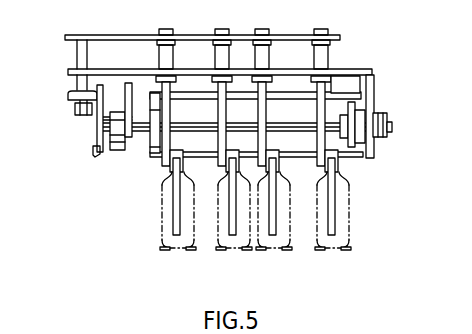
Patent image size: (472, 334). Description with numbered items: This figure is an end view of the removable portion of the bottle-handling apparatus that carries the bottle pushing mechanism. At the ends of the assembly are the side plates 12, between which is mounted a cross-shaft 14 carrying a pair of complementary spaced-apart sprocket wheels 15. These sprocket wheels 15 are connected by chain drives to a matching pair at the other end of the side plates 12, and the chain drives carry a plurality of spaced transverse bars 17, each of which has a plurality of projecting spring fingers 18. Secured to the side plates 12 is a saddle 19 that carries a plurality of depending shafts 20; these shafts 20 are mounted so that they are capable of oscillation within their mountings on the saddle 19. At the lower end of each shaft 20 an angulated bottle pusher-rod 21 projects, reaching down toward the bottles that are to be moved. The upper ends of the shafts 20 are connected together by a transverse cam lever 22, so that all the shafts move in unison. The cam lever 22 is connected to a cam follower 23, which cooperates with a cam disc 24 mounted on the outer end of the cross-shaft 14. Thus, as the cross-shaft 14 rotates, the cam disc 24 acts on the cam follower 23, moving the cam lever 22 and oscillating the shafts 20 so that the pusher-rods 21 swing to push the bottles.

The side plates 12 is at (375, 90).
The cross-shaft 14 is at (138, 140).
The sprocket wheels 15 is at (344, 153).
The transverse bars 17 is at (349, 93).
The spring fingers 18 is at (335, 169).
The saddle 19 is at (354, 77).
The depending shafts 20 is at (321, 110).
The bottle pusher-rod 21 is at (330, 212).
The cam lever 22 is at (182, 26).
The cam follower 23 is at (70, 94).
The cam disc 24 is at (100, 156).